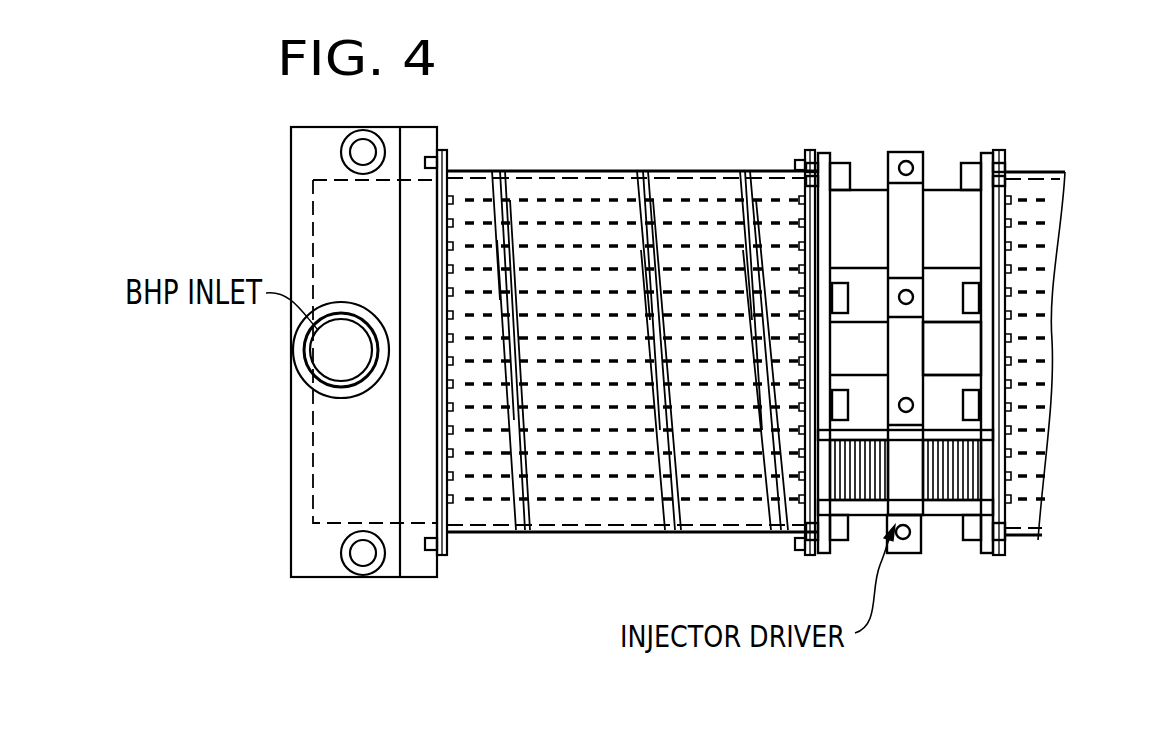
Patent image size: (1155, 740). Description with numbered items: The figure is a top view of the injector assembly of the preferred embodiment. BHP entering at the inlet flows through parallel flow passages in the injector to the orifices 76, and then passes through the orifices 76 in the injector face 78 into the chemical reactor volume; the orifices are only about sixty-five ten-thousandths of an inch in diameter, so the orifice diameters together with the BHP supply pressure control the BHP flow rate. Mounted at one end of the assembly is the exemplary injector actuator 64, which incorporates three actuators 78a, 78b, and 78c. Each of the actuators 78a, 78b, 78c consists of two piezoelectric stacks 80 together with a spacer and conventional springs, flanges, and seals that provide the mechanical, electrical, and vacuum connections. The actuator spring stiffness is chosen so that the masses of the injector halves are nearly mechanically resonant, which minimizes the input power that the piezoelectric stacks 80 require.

The injector actuator 64 is at (696, 171).
The orifices 76 is at (588, 190).
The injector face 78 is at (636, 512).
The actuator 78a is at (946, 512).
The actuator 78b is at (965, 353).
The actuator 78c is at (955, 199).
The piezoelectric stacks 80 is at (866, 517).